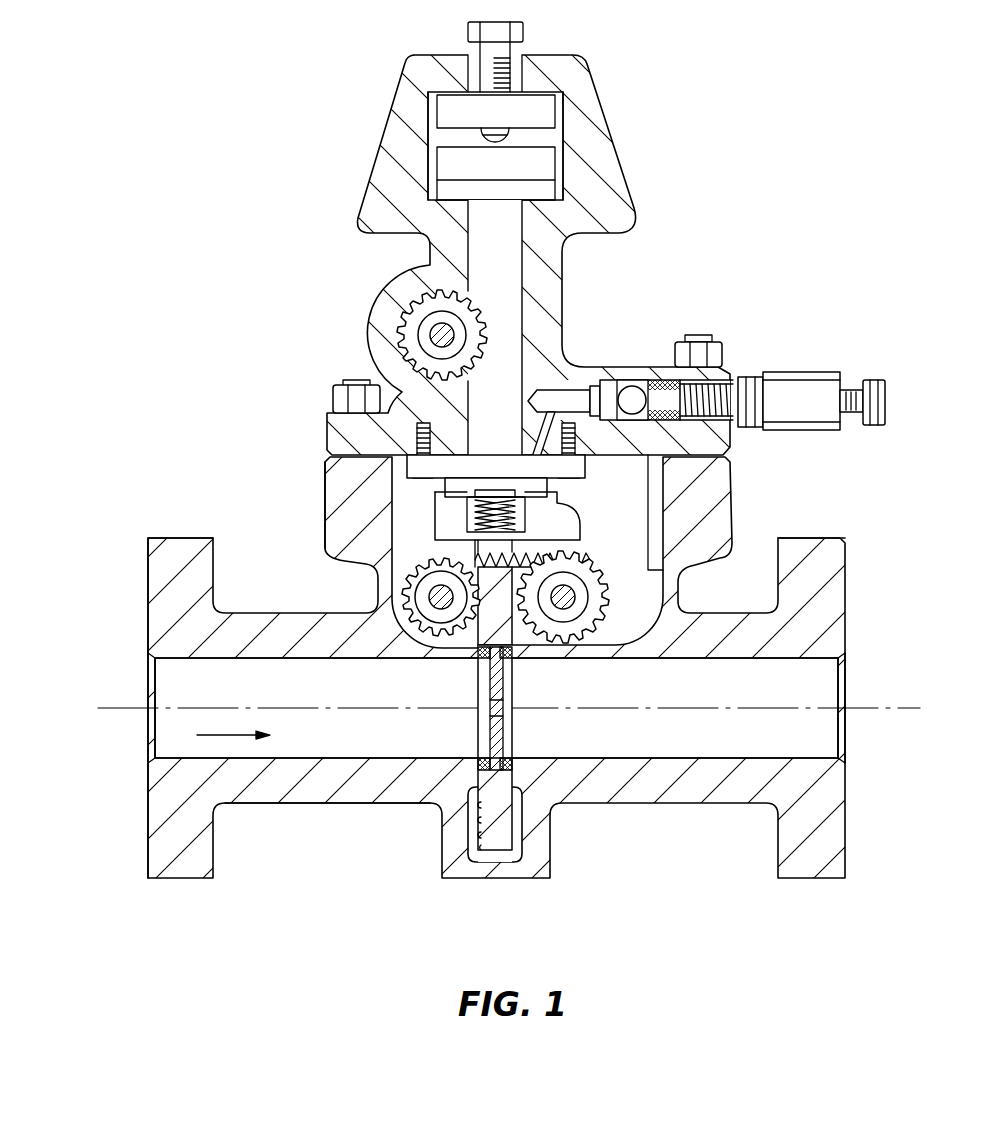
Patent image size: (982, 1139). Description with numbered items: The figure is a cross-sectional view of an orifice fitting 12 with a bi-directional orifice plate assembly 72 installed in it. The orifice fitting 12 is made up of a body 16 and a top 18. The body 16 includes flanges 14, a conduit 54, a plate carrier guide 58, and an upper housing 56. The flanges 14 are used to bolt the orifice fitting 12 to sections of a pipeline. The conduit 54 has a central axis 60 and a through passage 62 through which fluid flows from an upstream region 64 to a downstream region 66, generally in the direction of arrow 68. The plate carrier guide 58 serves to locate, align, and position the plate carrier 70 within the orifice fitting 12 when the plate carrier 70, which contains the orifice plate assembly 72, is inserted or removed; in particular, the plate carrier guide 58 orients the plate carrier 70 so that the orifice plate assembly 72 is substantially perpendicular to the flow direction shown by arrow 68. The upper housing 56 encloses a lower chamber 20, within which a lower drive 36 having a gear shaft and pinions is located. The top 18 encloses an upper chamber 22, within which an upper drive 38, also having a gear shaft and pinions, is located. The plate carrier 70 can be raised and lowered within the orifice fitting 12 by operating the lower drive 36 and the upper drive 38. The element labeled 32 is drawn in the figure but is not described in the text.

The orifice fitting 12 is at (772, 243).
The flanges 14 is at (157, 558).
The body 16 is at (348, 515).
The top 18 is at (537, 305).
The lower chamber 20 is at (637, 498).
The upper chamber 22 is at (497, 265).
The gate member 32 is at (498, 820).
The lower drive 36 is at (397, 587).
The upper drive 38 is at (405, 318).
The conduit 54 is at (307, 787).
The upper housing 56 is at (343, 480).
The plate carrier guide 58 is at (510, 763).
The central axis 60 is at (115, 707).
The through passage 62 is at (823, 732).
The upstream region 64 is at (352, 747).
The downstream region 66 is at (675, 744).
The arrow 68 is at (211, 735).
The plate carrier 70 is at (494, 738).
The orifice plate assembly 72 is at (507, 708).